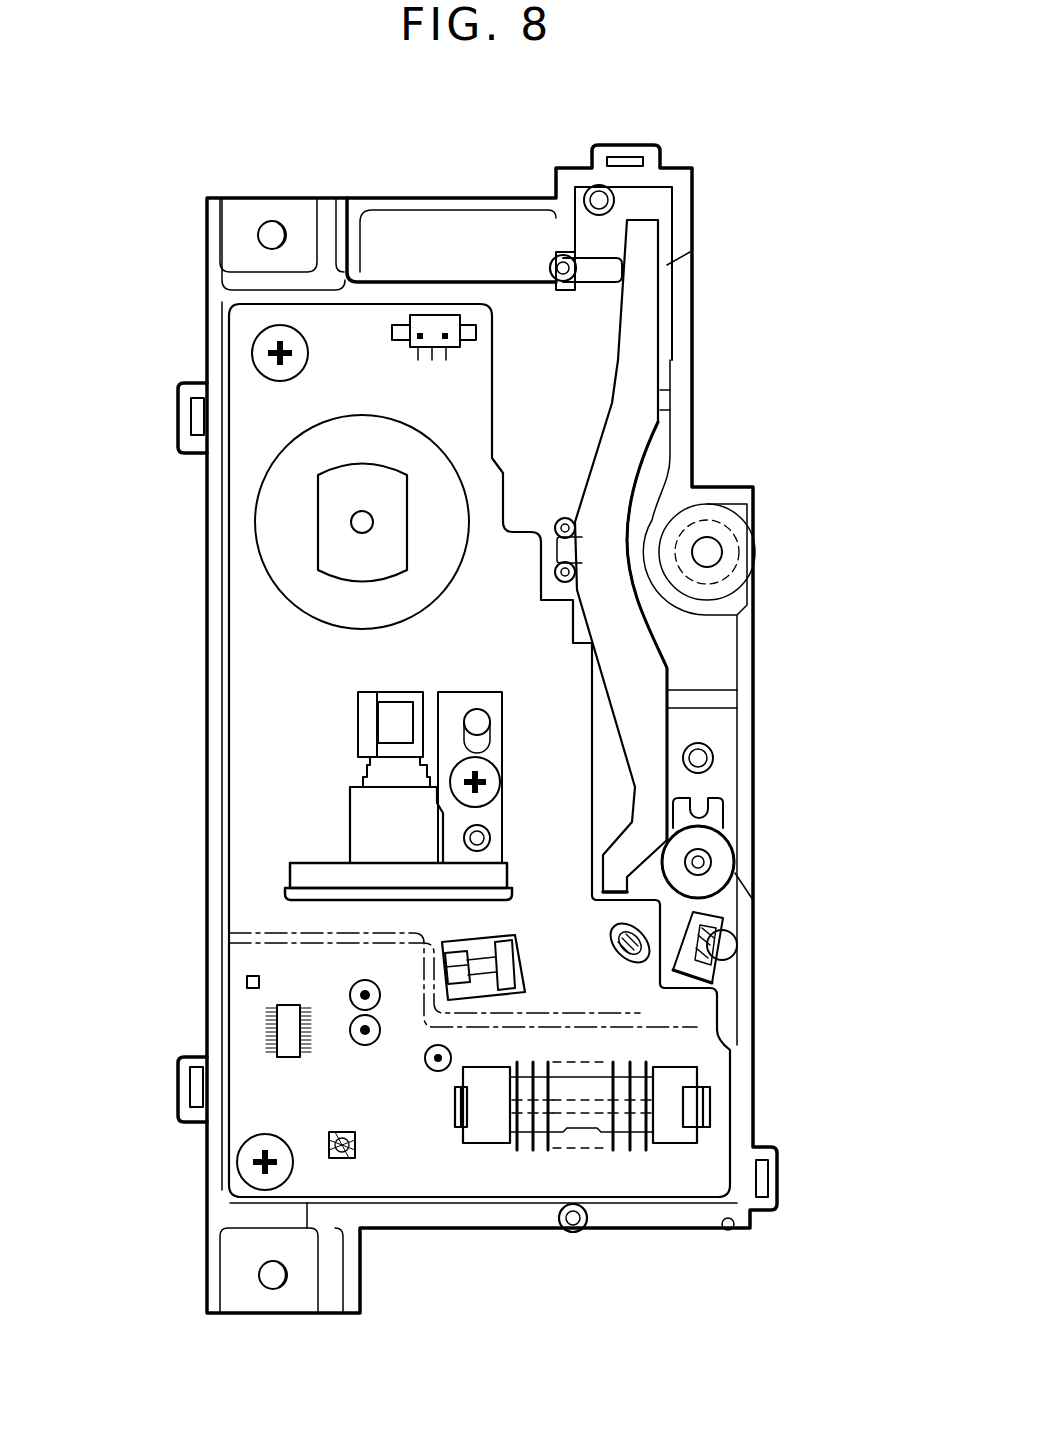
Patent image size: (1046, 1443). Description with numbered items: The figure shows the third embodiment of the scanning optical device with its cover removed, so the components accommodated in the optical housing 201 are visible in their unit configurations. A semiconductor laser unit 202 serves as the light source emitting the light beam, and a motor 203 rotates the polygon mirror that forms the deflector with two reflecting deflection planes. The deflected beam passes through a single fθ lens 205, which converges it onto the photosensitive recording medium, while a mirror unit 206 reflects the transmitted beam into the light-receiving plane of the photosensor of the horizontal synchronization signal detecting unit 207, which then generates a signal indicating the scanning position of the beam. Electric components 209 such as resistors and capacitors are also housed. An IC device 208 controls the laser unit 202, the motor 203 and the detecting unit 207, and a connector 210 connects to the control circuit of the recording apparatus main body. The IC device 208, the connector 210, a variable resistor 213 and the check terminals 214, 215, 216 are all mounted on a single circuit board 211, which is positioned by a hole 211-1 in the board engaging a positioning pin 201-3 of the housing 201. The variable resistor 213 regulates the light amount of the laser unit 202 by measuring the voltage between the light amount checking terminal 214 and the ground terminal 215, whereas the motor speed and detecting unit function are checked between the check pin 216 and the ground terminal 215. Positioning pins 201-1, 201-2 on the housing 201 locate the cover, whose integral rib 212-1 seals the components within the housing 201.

The optical housing 201 is at (488, 218).
The positioning pin 201-1 is at (583, 1229).
The positioning pin 201-2 is at (570, 256).
The positioning pin 201-3 is at (650, 940).
The semiconductor laser unit 202 is at (360, 818).
The motor 203 is at (358, 422).
The fθ lens 205 is at (647, 278).
The mirror unit 206 is at (727, 950).
The horizontal synchronization signal detecting unit 207 is at (523, 970).
The IC device 208 is at (287, 1025).
The electric components 209 is at (250, 977).
The connector 210 is at (493, 1135).
The circuit board 211 is at (698, 1177).
The hole 211-1 is at (612, 925).
The rib 212-1 is at (687, 1026).
The variable resistor 213 is at (330, 1153).
The light amount checking terminal 214 is at (365, 1030).
The ground terminal 215 is at (363, 995).
The check pin 216 is at (433, 1068).